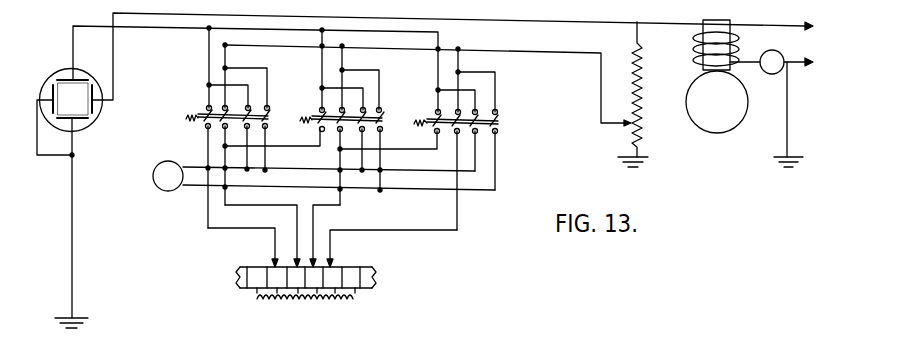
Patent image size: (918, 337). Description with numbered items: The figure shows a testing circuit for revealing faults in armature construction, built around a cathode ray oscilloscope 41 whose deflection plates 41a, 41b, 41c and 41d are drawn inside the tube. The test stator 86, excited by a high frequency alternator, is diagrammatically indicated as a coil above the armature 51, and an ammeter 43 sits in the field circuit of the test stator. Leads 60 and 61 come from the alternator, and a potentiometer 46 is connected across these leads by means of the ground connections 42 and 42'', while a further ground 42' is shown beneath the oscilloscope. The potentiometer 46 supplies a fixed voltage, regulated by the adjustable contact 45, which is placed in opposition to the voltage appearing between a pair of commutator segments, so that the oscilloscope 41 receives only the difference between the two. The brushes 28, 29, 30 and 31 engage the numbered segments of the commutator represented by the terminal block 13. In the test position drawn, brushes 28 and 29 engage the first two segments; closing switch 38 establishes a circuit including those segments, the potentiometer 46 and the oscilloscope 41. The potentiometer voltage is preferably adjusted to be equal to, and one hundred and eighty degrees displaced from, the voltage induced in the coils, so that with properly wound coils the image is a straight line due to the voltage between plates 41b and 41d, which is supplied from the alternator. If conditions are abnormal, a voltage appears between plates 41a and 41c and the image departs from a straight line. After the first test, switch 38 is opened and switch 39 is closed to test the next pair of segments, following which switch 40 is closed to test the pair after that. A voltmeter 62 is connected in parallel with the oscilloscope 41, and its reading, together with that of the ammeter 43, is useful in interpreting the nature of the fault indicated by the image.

The terminal block 13 is at (240, 286).
The brush 28 is at (270, 262).
The brush 29 is at (292, 262).
The conductor 30 is at (318, 263).
The conductor 31 is at (336, 263).
The switch 38 is at (206, 110).
The switch 39 is at (319, 113).
The switch 40 is at (434, 116).
The oscilloscope 41 is at (84, 97).
The plate of the oscilloscope 41a is at (77, 80).
The plate of the oscilloscope 41b is at (97, 104).
The plate of the oscilloscope 41c is at (84, 119).
The plate of the oscilloscope 41d is at (51, 93).
The ground connection 42 is at (644, 177).
The ground 42' is at (93, 327).
The ground connection 42'' is at (789, 136).
The ammeter 43 is at (766, 74).
The adjustable contact 45 is at (624, 128).
The potentiometer 46 is at (641, 92).
The armature 51 is at (711, 133).
The lead 60 is at (790, 30).
The lead 61 is at (795, 66).
The voltmeter 62 is at (166, 191).
The test stator 86 is at (693, 41).